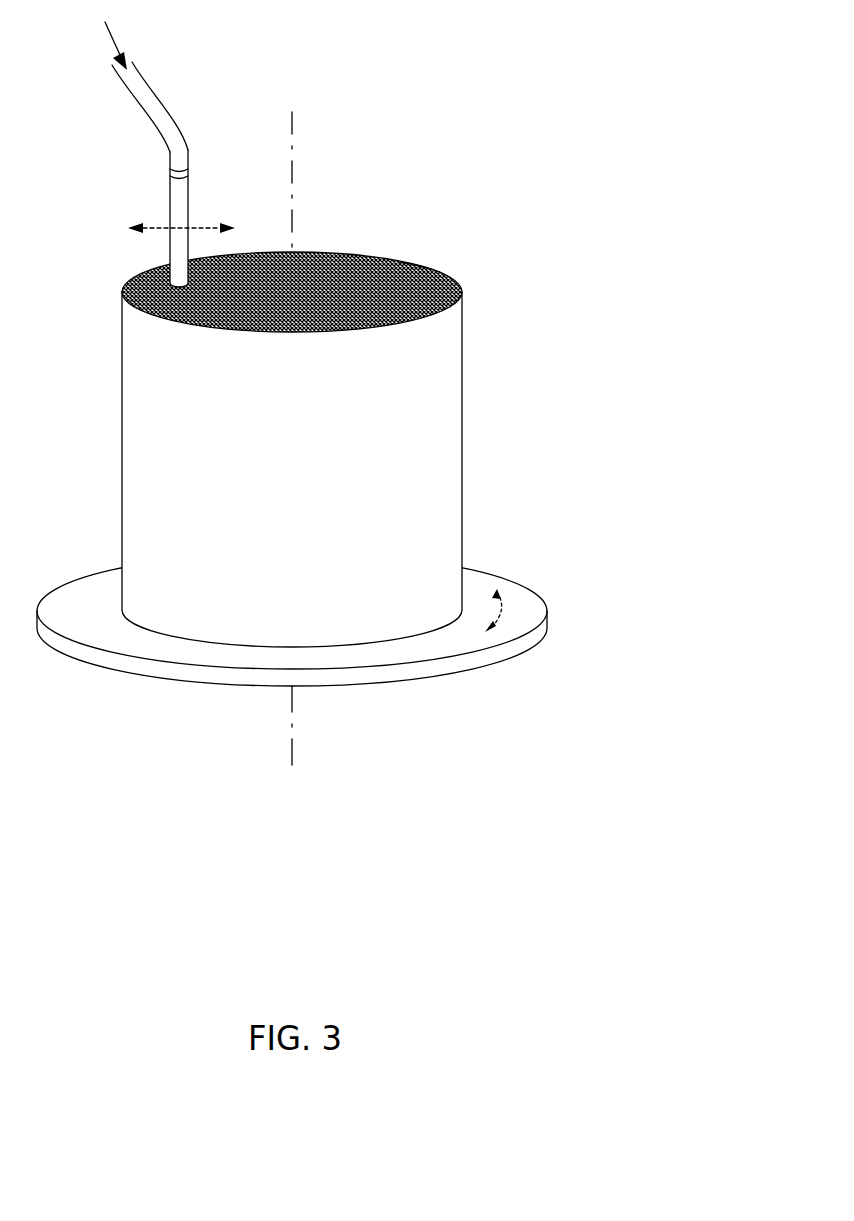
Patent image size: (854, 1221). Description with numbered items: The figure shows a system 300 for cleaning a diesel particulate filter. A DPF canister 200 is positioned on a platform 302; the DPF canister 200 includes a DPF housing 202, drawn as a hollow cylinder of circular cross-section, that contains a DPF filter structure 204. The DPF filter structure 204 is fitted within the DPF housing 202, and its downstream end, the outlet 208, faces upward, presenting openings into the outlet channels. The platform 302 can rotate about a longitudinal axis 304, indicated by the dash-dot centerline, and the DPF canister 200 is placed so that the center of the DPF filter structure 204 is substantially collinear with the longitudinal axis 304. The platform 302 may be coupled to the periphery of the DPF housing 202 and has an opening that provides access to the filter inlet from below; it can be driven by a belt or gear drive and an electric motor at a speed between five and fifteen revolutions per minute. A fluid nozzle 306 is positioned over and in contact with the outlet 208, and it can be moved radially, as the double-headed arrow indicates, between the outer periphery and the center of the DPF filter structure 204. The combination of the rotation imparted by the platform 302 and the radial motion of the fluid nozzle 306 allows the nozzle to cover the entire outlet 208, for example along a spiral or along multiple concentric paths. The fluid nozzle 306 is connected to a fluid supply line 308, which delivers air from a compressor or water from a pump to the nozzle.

The system 300 is at (611, 362).
The DPF canister 200 is at (484, 452).
The DPF housing 202 is at (320, 500).
The DPF filter structure 204 is at (362, 279).
The outlet 208 is at (421, 281).
The platform 302 is at (549, 614).
The longitudinal axis 304 is at (293, 170).
The fluid nozzle 306 is at (170, 198).
The fluid supply line 308 is at (176, 118).